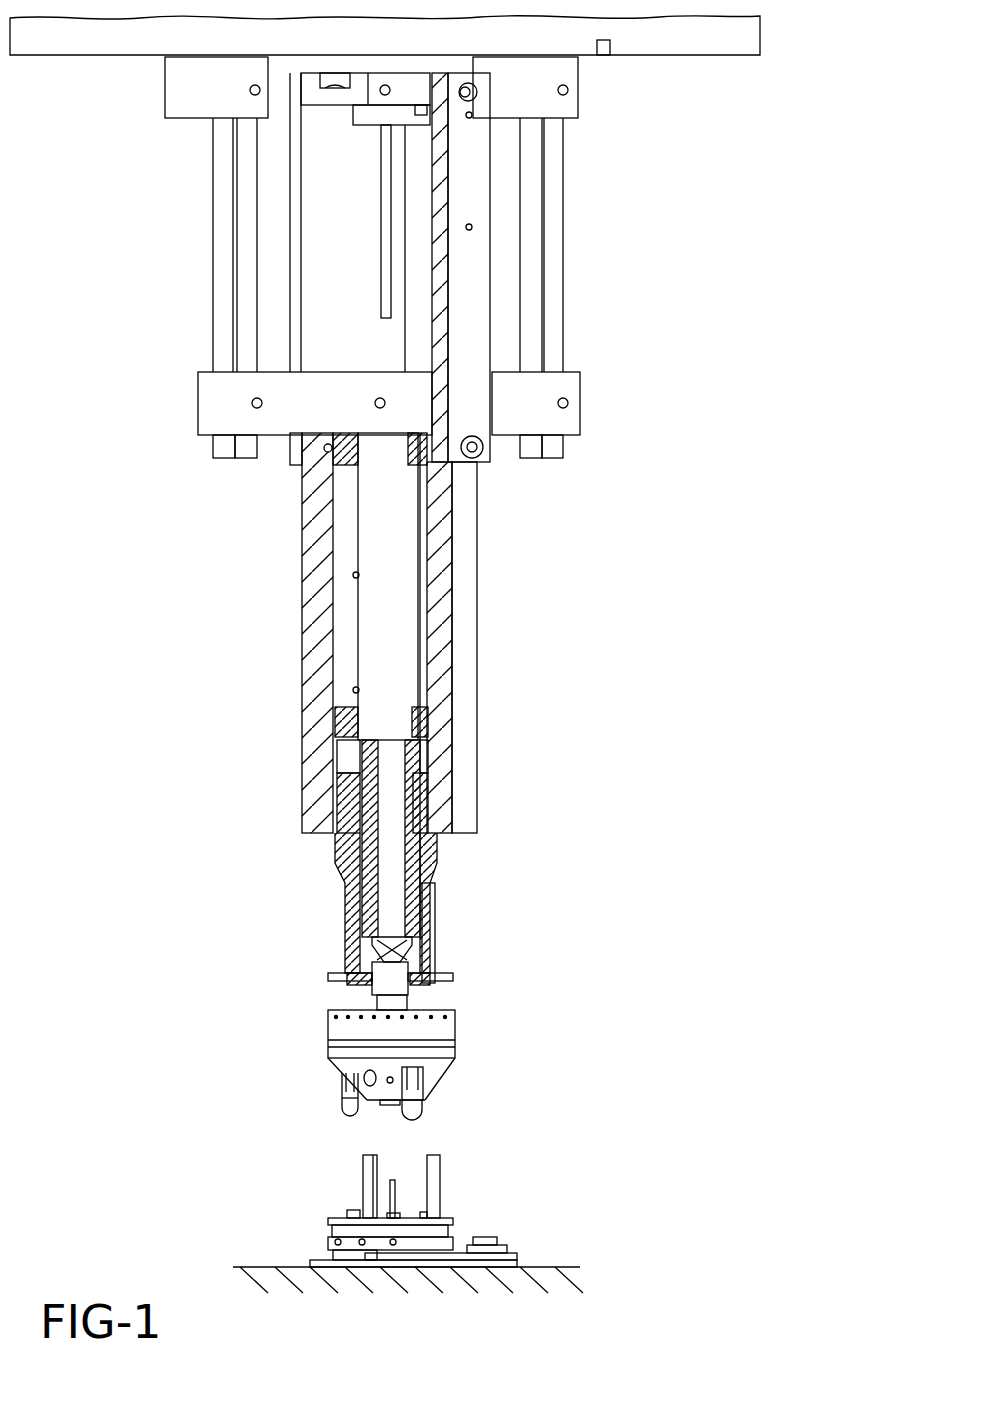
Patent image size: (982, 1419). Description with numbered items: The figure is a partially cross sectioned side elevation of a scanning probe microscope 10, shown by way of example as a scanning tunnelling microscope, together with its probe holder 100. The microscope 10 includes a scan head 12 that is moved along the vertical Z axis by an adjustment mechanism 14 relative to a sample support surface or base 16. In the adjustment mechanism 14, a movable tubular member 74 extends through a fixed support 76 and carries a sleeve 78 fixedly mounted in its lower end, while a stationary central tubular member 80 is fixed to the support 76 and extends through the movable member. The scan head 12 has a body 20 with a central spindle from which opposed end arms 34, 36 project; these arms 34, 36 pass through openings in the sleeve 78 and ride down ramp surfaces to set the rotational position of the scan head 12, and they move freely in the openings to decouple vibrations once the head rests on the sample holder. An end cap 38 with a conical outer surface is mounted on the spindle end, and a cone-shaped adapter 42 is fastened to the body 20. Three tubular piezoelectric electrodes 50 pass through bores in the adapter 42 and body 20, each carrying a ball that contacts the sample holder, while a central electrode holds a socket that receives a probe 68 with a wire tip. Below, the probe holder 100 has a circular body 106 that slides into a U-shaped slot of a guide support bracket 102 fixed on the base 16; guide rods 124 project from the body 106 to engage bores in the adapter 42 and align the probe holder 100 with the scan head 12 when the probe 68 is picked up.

The scanning probe microscope 10 is at (108, 592).
The scan head 12 is at (184, 1006).
The adjustment mechanism 14 is at (492, 607).
The sample support surface or base 16 is at (560, 1268).
The body 20 is at (447, 1033).
The end arm 34 is at (457, 970).
The end arm 36 is at (332, 975).
The end cap 38 is at (395, 948).
The cone-shaped adapter 42 is at (435, 1072).
The tubular piezoelectric electrode 50 is at (343, 1097).
The probe 68 is at (394, 1180).
The movable tubular member 74 is at (438, 688).
The fixed support 76 is at (567, 422).
The sleeve 78 is at (343, 863).
The stationary central tubular member 80 is at (410, 650).
The probe holder 100 is at (270, 1180).
The guide support bracket 102 is at (520, 1255).
The body 106 is at (335, 1230).
The guide posts or rods 124 is at (370, 1155).